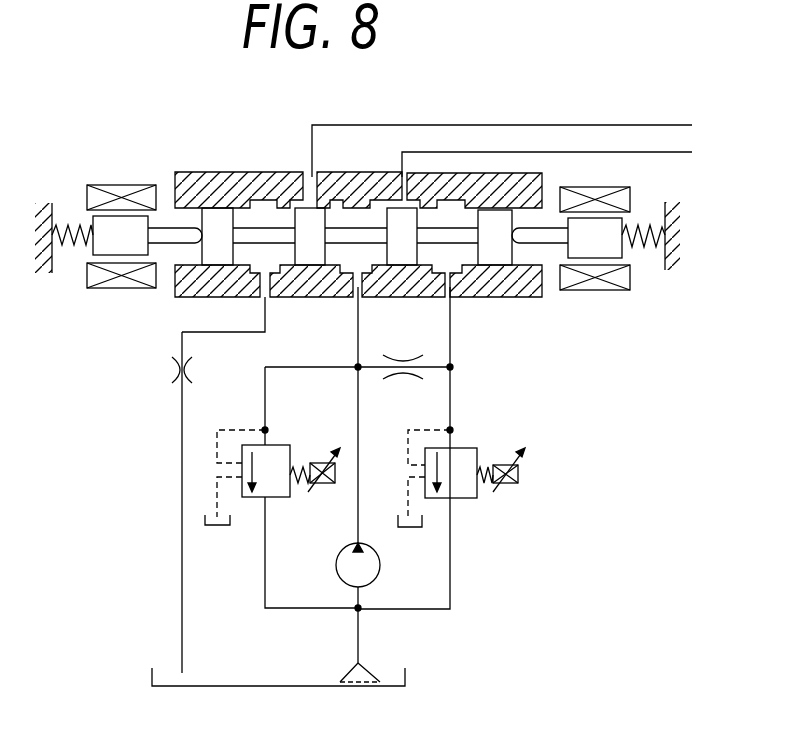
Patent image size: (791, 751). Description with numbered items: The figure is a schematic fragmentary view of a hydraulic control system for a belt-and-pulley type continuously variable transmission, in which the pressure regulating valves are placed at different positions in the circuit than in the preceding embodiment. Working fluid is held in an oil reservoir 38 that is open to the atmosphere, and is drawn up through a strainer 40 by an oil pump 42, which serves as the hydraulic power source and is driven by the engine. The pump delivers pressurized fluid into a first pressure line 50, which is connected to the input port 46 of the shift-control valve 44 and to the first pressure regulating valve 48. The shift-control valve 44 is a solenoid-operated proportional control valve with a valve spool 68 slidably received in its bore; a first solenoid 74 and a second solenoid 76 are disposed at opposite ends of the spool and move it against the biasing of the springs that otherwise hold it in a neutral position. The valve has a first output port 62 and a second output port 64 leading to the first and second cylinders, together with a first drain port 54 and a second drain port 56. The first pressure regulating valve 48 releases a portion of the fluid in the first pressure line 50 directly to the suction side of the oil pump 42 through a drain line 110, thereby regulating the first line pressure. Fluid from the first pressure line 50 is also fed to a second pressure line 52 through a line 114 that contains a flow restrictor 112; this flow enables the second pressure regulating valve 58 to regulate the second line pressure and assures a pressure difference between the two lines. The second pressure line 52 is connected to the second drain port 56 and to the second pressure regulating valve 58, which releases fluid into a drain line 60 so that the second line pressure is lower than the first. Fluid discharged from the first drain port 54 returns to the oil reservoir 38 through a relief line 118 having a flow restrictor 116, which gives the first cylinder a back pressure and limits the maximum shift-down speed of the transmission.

The oil reservoir 38 is at (405, 677).
The strainer 40 is at (342, 678).
The oil pump 42 is at (340, 568).
The shift-control valve 44 is at (85, 347).
The input port 46 is at (368, 292).
The first pressure regulating valve 48 is at (277, 497).
The first pressure line 50 is at (358, 388).
The second pressure line 52 is at (452, 348).
The first drain port 54 is at (260, 286).
The second drain port 56 is at (457, 287).
The second pressure regulating valve 58 is at (460, 498).
The drain line 60 is at (450, 583).
The first output port 62 is at (303, 192).
The second output port 64 is at (400, 188).
The valve spool 68 is at (515, 256).
The first solenoid 74 is at (107, 181).
The second solenoid 76 is at (604, 184).
The drain line 110 is at (265, 583).
The flow restrictor 112 is at (407, 358).
The line 114 is at (410, 371).
The flow restrictor 116 is at (172, 363).
The relief line 118 is at (182, 422).